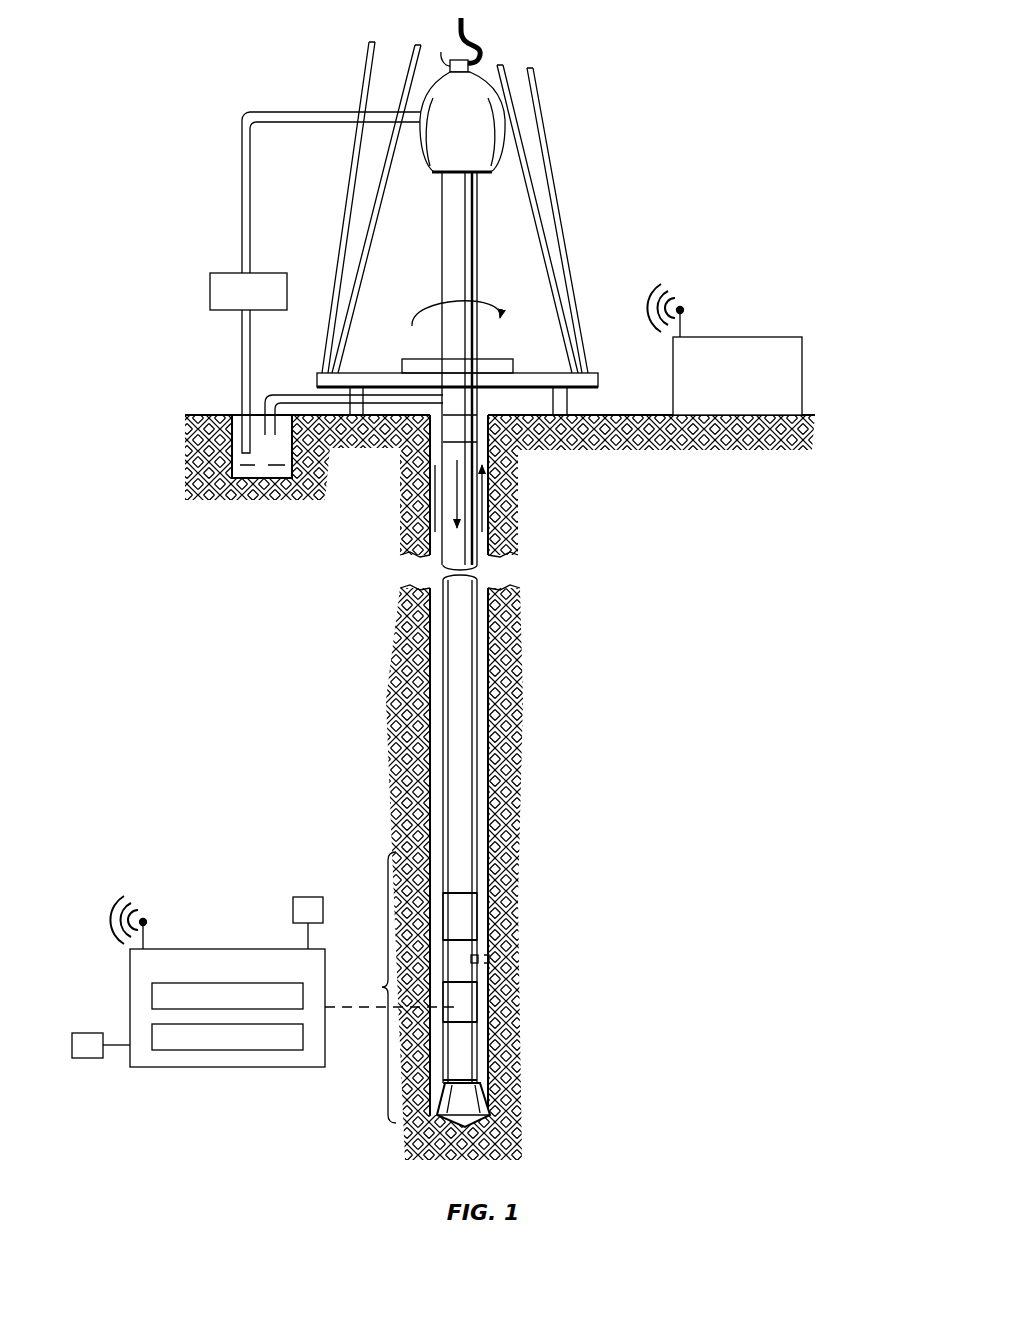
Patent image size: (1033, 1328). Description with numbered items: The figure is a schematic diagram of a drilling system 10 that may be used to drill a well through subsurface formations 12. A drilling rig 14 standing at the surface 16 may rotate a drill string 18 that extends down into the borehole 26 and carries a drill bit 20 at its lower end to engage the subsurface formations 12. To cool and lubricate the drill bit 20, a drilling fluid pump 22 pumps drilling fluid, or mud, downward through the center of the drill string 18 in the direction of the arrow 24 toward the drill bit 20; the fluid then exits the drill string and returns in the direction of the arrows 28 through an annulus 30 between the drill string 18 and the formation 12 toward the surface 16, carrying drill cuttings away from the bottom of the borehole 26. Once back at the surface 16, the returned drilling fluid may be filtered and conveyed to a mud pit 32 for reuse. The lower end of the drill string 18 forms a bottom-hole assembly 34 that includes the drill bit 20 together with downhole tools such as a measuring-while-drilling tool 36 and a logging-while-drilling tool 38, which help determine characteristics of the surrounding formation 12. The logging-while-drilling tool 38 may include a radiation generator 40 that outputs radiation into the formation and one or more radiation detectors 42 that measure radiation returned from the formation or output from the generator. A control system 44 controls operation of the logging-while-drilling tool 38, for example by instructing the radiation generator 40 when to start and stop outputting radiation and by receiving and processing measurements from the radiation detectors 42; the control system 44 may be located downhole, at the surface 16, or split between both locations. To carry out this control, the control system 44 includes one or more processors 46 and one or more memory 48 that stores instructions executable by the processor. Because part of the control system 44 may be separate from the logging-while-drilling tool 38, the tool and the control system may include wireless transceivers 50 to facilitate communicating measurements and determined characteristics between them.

The drilling system 10 is at (612, 58).
The subsurface formations 12 is at (634, 760).
The drilling rig 14 is at (572, 128).
The surface 16 is at (636, 410).
The drill string 18 is at (456, 408).
The drill bit 20 is at (468, 1103).
The drilling fluid pump 22 is at (210, 288).
The arrow 24 is at (455, 512).
The borehole 26 is at (432, 780).
The arrows 28 is at (437, 499).
The annulus 30 is at (483, 416).
The mud pit 32 is at (268, 480).
The bottom-hole assembly 34 is at (383, 987).
The measuring-while-drilling (MWD) tool 36 is at (467, 920).
The logging-while-drilling (LWD) tool 38 is at (467, 997).
The radiation generator 40 is at (293, 912).
The radiation detectors 42 is at (88, 1058).
The control system 44 is at (785, 337).
The processor 46 is at (152, 995).
The memory 48 is at (152, 1035).
The wireless transceivers 50 is at (690, 306).